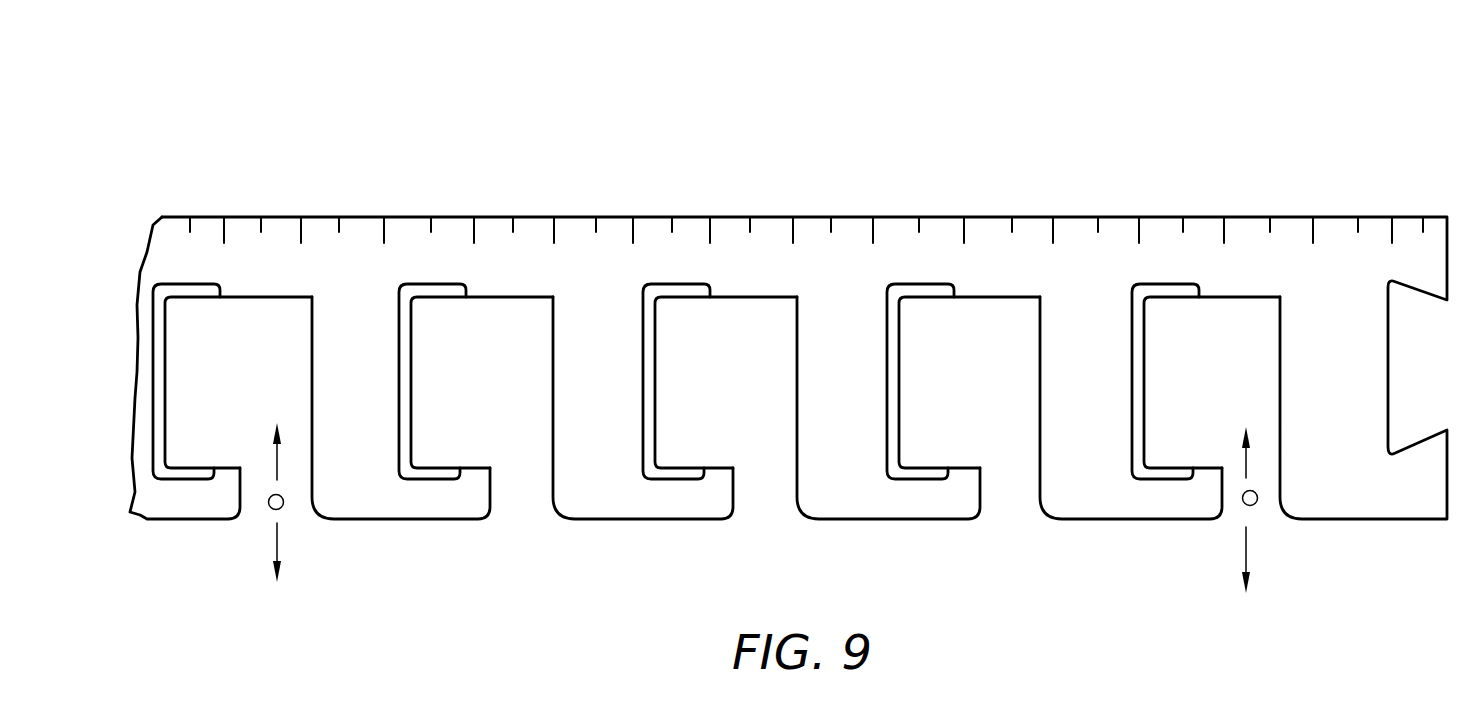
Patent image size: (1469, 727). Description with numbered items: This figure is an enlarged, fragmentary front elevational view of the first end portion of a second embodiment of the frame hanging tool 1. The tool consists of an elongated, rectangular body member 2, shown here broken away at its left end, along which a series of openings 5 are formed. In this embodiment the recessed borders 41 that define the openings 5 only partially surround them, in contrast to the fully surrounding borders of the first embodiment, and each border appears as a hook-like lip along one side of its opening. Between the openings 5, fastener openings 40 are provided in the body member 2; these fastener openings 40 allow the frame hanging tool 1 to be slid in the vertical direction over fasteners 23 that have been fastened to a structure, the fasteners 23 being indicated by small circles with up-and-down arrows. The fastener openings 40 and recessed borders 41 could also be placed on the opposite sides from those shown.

The frame hanging tool 1 is at (1118, 88).
The body member 2 is at (648, 228).
The openings 5 is at (440, 428).
The fasteners 23 is at (268, 508).
The fastener openings 40 is at (518, 493).
The recessed borders 41 is at (432, 287).